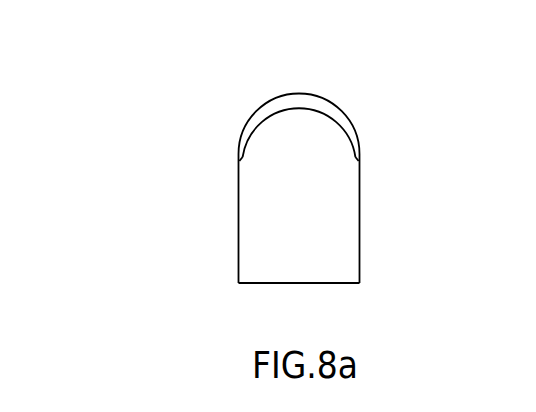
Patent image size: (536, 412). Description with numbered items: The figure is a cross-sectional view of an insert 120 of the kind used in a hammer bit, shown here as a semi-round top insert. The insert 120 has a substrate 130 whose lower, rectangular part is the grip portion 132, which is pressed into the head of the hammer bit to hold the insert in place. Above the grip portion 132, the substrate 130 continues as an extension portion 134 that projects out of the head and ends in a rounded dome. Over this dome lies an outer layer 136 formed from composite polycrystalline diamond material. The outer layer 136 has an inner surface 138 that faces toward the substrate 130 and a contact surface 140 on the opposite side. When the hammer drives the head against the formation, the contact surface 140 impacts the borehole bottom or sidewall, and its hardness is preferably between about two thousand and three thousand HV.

The insert 120 is at (174, 222).
The substrate 130 is at (360, 218).
The grip portion 132 is at (352, 268).
The extension portion 134 is at (335, 147).
The outer layer 136 is at (327, 107).
The inner surface 138 is at (255, 128).
The contact surface 140 is at (273, 98).